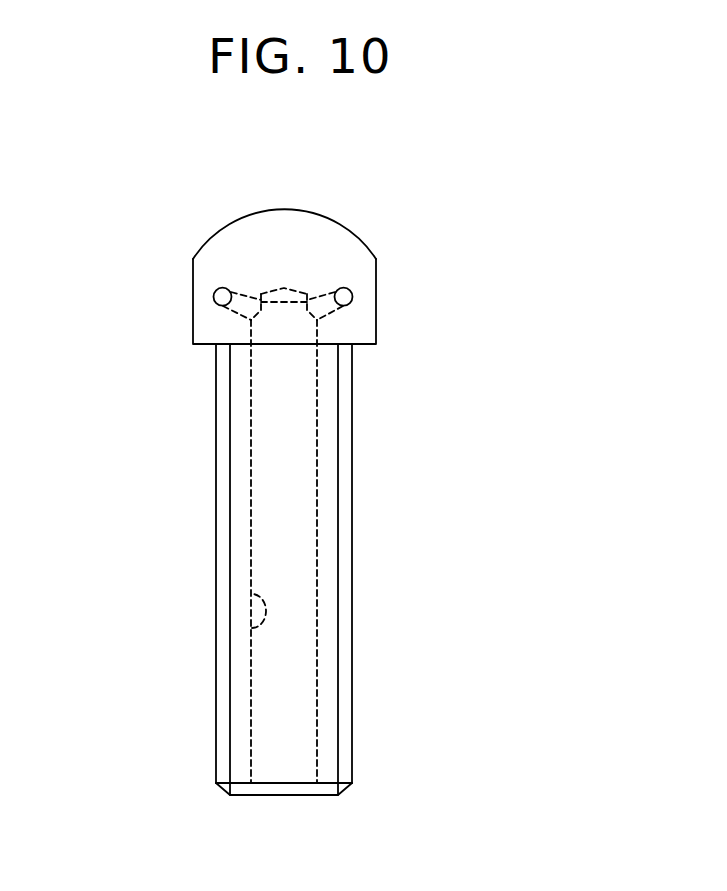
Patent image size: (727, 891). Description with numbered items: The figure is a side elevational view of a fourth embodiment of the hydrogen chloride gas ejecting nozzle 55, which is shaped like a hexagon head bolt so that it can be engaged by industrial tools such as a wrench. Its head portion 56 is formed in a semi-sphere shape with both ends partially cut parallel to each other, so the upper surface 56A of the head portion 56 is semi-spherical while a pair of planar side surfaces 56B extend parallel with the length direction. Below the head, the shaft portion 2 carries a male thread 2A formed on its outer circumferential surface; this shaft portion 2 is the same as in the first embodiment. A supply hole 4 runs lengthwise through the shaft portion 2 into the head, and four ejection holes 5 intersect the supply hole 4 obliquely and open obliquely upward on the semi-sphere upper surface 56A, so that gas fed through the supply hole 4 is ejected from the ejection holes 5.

The hydrogen chloride gas ejecting nozzle 55 is at (410, 258).
The head portion 56 is at (340, 224).
The upper surface 56A is at (272, 210).
The planar side surfaces 56B is at (192, 305).
The ejection holes 5 is at (222, 296).
The shaft portion 2 is at (365, 538).
The male thread 2A is at (352, 653).
The supply hole 4 is at (252, 628).